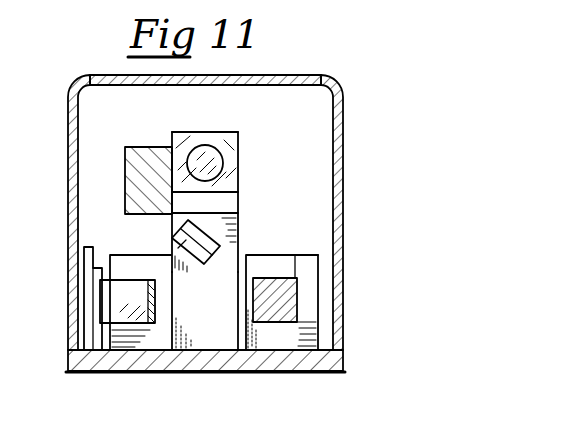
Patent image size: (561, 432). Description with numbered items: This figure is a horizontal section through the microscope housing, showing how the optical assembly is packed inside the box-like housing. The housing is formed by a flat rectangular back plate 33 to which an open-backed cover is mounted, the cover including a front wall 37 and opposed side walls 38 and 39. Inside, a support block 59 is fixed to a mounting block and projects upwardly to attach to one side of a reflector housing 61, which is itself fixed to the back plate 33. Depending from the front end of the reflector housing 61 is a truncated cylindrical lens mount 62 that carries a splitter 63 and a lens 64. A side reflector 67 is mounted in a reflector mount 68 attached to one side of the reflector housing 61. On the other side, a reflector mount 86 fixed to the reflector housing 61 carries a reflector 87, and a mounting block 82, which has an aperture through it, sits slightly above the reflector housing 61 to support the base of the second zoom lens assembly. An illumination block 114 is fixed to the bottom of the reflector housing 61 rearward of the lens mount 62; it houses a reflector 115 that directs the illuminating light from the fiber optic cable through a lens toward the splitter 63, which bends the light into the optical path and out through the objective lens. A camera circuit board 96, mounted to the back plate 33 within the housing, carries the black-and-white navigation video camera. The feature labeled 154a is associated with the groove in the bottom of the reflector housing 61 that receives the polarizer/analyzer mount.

The back plate 33 is at (137, 368).
The front wall 37 is at (240, 76).
The side wall 38 is at (68, 168).
The side wall 39 is at (344, 240).
The support block 59 is at (125, 160).
The reflector housing 61 is at (203, 330).
The lens mount 62 is at (196, 132).
The splitter 63 is at (232, 134).
The lens 64 is at (223, 157).
The side reflector 67 is at (108, 296).
The reflector mount 68 is at (135, 255).
The mounting block 82 is at (310, 328).
The reflector mount 86 is at (270, 343).
The reflector 87 is at (299, 278).
The camera circuit board 96 is at (96, 257).
The illumination block 114 is at (240, 233).
The reflector 115 is at (193, 262).
The intermediate plate 154a is at (234, 204).